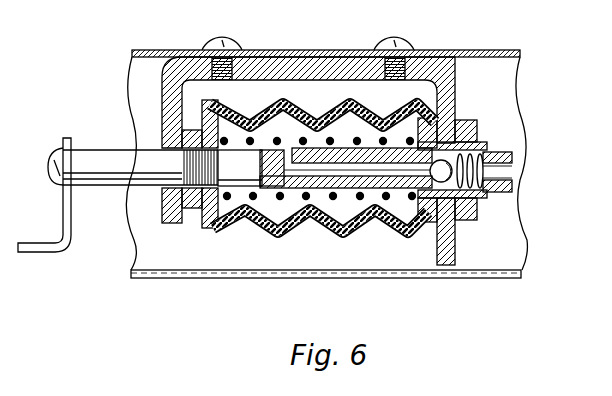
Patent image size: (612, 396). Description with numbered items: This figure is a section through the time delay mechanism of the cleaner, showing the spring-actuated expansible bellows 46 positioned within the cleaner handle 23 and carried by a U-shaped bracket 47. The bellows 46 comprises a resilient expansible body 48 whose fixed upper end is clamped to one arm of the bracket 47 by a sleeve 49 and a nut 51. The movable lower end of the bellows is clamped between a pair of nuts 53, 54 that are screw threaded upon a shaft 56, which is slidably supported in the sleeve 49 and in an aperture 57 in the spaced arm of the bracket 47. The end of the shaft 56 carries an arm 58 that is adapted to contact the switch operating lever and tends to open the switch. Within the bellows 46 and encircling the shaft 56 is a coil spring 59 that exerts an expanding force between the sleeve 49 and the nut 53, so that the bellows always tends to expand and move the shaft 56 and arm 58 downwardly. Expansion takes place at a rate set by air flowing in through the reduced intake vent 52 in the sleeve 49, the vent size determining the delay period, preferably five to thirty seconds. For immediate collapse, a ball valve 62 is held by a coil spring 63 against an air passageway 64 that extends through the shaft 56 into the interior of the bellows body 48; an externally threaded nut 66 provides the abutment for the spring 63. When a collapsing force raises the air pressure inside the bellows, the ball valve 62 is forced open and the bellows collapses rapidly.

The cleaner handle 23 is at (490, 52).
The expansible bellows 46 is at (303, 113).
The U-shaped bracket 47 is at (457, 82).
The resilient expansible body 48 is at (294, 229).
The sleeve 49 is at (483, 198).
The nut 51 is at (478, 122).
The reduced intake vent 52 is at (497, 199).
The nut 53 is at (213, 228).
The nut 54 is at (188, 209).
The shaft 56 is at (251, 168).
The aperture 57 is at (165, 146).
The arm 58 is at (63, 253).
The coil spring 59 is at (307, 199).
The ball valve 62 is at (448, 181).
The coil spring 63 is at (478, 150).
The air passageway 64 is at (381, 176).
The externally threaded nut 66 is at (510, 163).